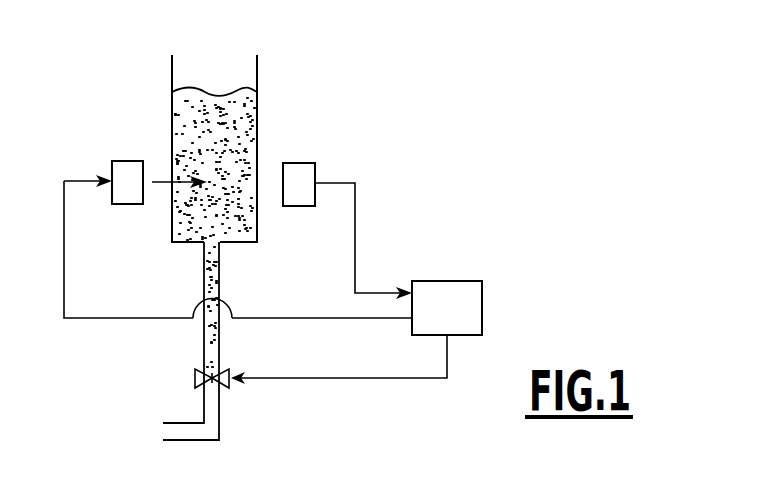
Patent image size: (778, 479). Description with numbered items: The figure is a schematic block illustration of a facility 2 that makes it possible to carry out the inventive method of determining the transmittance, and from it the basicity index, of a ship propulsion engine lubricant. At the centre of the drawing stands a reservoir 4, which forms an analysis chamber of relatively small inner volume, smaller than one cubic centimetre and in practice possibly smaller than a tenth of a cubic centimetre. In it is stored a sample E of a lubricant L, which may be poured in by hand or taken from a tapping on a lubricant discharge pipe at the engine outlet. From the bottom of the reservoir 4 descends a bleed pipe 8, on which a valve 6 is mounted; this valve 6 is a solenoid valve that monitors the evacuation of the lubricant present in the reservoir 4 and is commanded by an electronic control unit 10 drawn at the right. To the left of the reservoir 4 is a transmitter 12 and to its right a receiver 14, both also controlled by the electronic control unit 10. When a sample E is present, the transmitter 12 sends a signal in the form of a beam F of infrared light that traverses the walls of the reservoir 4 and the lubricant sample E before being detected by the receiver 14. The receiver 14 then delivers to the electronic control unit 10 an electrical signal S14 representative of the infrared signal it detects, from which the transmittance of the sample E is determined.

The facility 2 is at (397, 92).
The reservoir 4 is at (245, 78).
The valve 6 is at (192, 385).
The bleed pipe 8 is at (220, 279).
The electronic control unit 10 is at (483, 306).
The transmitter 12 is at (129, 170).
The receiver 14 is at (309, 173).
The sample E is at (245, 132).
The lubricant L is at (215, 143).
The beam F is at (164, 190).
The electrical signal S14 is at (385, 269).